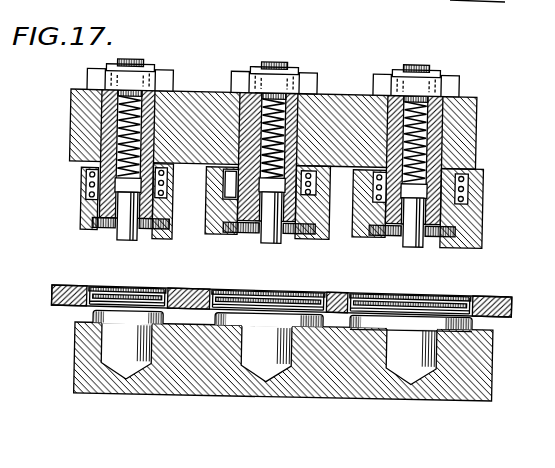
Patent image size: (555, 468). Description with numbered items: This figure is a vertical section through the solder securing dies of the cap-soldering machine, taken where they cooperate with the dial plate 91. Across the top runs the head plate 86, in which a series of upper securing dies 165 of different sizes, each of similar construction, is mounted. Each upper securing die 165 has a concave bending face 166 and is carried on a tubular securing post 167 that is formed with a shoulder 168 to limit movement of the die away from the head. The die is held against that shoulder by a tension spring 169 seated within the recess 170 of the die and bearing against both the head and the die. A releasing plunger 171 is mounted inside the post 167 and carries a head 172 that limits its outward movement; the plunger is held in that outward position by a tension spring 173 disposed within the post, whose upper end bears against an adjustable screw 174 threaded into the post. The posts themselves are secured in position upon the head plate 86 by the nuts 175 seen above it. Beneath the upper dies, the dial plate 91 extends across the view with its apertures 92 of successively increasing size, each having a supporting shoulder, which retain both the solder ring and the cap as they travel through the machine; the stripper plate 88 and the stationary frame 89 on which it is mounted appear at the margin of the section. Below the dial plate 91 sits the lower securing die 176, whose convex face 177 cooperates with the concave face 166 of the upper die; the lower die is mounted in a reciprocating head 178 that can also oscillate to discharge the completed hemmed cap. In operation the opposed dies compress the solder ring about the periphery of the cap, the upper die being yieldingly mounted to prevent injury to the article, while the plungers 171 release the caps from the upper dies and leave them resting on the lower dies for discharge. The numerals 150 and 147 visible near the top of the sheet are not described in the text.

The head plate 86 is at (478, 108).
The tension spring 173 is at (118, 119).
The nuts 175 is at (173, 71).
The adjustable screw 174 is at (432, 67).
The tubular securing post 167 is at (317, 93).
The releasing plunger 171 is at (135, 240).
The upper securing die 165 is at (90, 208).
The tension spring 169 is at (96, 169).
The recess 170 is at (228, 195).
The head 172 is at (461, 175).
The concave bending face 166 is at (218, 234).
The shoulder 168 is at (303, 234).
The reciprocating head 178 is at (484, 385).
The convex face 177 is at (93, 314).
The lower securing die 176 is at (463, 330).
The dial plate 91 is at (508, 313).
The apertures 92 is at (97, 277).
The part 150 is at (265, 8).
The part 147 is at (392, 14).
The stripper plate 88 is at (10, 232).
The stationary frame 89 is at (14, 264).